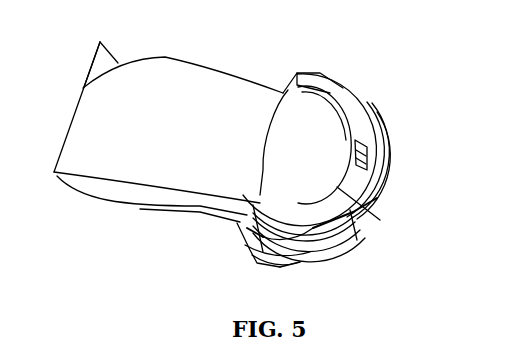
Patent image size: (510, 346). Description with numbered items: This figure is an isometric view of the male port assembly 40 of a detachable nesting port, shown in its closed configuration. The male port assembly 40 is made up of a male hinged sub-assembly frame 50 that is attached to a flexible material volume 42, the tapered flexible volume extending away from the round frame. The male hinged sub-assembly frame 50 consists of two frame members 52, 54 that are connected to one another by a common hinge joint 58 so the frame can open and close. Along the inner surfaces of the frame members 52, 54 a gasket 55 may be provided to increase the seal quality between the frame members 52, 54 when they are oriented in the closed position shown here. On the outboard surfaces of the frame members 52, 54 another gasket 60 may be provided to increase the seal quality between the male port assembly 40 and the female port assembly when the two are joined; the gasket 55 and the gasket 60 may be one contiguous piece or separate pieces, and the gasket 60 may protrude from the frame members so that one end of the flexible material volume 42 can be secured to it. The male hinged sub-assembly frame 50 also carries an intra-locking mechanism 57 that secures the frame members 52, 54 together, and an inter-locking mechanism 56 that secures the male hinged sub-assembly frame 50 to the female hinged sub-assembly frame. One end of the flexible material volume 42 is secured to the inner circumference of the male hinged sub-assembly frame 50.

The male port assembly 40 is at (160, 196).
The flexible material volume 42 is at (103, 112).
The male hinged sub-assembly frame 50 is at (348, 240).
The frame member 52 is at (360, 103).
The frame member 54 is at (333, 82).
The gasket 55 is at (317, 230).
The inter-locking mechanism 56 is at (383, 127).
The intra-locking mechanism 57 is at (370, 167).
The common hinge joint 58 is at (250, 225).
The gasket 60 is at (293, 110).